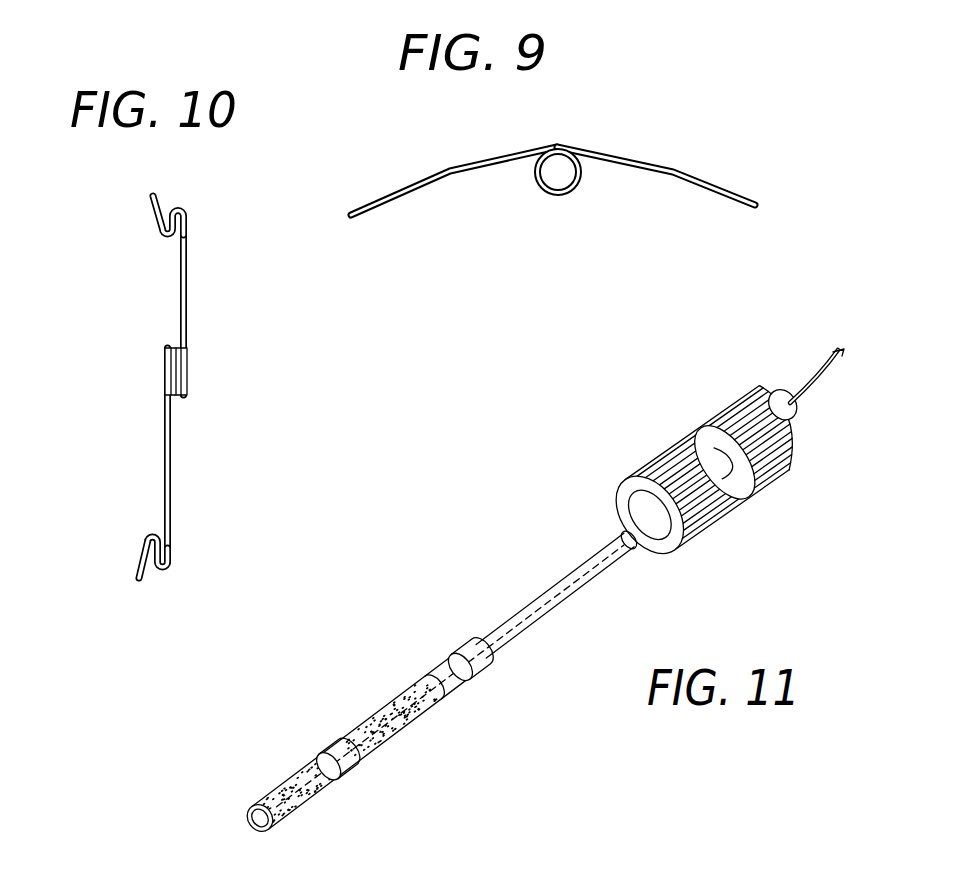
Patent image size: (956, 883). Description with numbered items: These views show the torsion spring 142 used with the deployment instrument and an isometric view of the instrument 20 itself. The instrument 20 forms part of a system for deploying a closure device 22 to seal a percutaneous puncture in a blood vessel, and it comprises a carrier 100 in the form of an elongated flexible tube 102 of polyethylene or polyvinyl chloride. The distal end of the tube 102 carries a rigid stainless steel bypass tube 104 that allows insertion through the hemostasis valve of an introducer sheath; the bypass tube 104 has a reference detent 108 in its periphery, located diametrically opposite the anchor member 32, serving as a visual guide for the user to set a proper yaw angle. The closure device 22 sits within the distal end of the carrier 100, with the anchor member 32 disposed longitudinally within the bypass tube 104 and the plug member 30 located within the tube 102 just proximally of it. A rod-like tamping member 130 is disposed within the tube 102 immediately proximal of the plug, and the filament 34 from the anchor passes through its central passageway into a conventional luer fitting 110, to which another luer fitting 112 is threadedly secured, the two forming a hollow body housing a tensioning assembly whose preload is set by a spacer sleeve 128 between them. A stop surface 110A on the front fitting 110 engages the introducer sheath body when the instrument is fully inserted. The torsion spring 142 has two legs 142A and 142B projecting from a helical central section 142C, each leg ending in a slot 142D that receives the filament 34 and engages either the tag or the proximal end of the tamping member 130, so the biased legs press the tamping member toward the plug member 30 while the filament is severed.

In FIG. 9, the torsion spring 142 is at (553, 145).
In FIG. 10, the torsion spring 142 is at (181, 369).
In FIG. 9, the leg 142A is at (584, 174).
In FIG. 10, the leg 142A is at (188, 370).
In FIG. 9, the leg 142B is at (673, 170).
In FIG. 10, the leg 142B is at (172, 448).
In FIG. 9, the helical central section 142C is at (463, 166).
In FIG. 10, the helical central section 142C is at (188, 288).
In FIG. 10, the slot 142D is at (188, 214).
In FIG. 11, the carrier 100 is at (515, 612).
In FIG. 11, the instrument 20 is at (400, 681).
In FIG. 11, the closure device 22 is at (236, 820).
In FIG. 11, the plug member 30 is at (388, 704).
In FIG. 11, the anchor member 32 is at (262, 832).
In FIG. 11, the filament 34 is at (817, 380).
In FIG. 11, the elongated tube 102 is at (507, 643).
In FIG. 11, the bypass tube 104 is at (277, 788).
In FIG. 11, the reference detent 108 is at (323, 750).
In FIG. 11, the luer fitting 110 is at (705, 479).
In FIG. 11, the stop surface 110A is at (623, 522).
In FIG. 11, the luer fitting 112 is at (773, 458).
In FIG. 11, the spacer sleeve 128 is at (732, 498).
In FIG. 11, the tamping member 130 is at (463, 645).